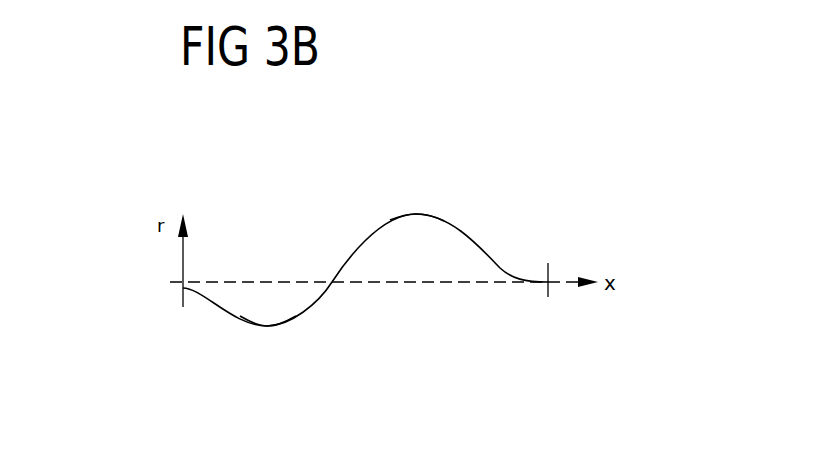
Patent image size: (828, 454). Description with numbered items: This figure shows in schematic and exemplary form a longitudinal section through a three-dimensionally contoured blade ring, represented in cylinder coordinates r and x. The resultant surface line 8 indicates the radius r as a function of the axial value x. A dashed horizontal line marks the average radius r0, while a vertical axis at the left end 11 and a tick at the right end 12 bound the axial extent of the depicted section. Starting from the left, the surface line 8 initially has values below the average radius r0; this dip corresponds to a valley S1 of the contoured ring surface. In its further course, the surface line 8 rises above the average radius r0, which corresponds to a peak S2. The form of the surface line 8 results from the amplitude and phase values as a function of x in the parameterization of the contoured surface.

The surface line 8 is at (371, 229).
The inlet end of wall section 11 is at (182, 295).
The outlet end of wall section 12 is at (550, 285).
The valley S1 is at (274, 338).
The peak S2 is at (444, 203).
The average radius r0 is at (398, 284).